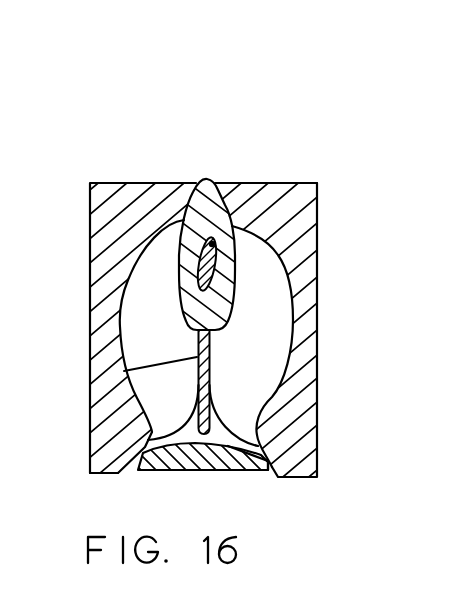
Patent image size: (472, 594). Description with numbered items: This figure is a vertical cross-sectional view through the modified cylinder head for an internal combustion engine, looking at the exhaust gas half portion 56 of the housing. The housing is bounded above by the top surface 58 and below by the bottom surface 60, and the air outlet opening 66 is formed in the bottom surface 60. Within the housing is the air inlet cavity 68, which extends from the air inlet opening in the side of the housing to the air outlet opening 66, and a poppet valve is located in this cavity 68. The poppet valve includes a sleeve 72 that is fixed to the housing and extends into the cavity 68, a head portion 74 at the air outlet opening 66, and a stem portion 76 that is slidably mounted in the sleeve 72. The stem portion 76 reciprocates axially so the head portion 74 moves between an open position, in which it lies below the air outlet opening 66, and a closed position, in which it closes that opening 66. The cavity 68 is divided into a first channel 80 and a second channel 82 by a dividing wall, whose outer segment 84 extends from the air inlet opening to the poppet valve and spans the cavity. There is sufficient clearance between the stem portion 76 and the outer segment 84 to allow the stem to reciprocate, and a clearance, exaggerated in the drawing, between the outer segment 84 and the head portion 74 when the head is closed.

The exhaust gas half portion 56 is at (213, 151).
The top surface 58 is at (137, 182).
The bottom surface 60 is at (102, 473).
The air outlet opening 66 is at (135, 472).
The air inlet cavity 68 is at (150, 400).
The sleeve 72 is at (217, 185).
The head portion 74 is at (254, 466).
The stem portion 76 is at (307, 185).
The first channel 80 is at (278, 300).
The second channel 82 is at (135, 312).
The outer segment 84 is at (124, 371).